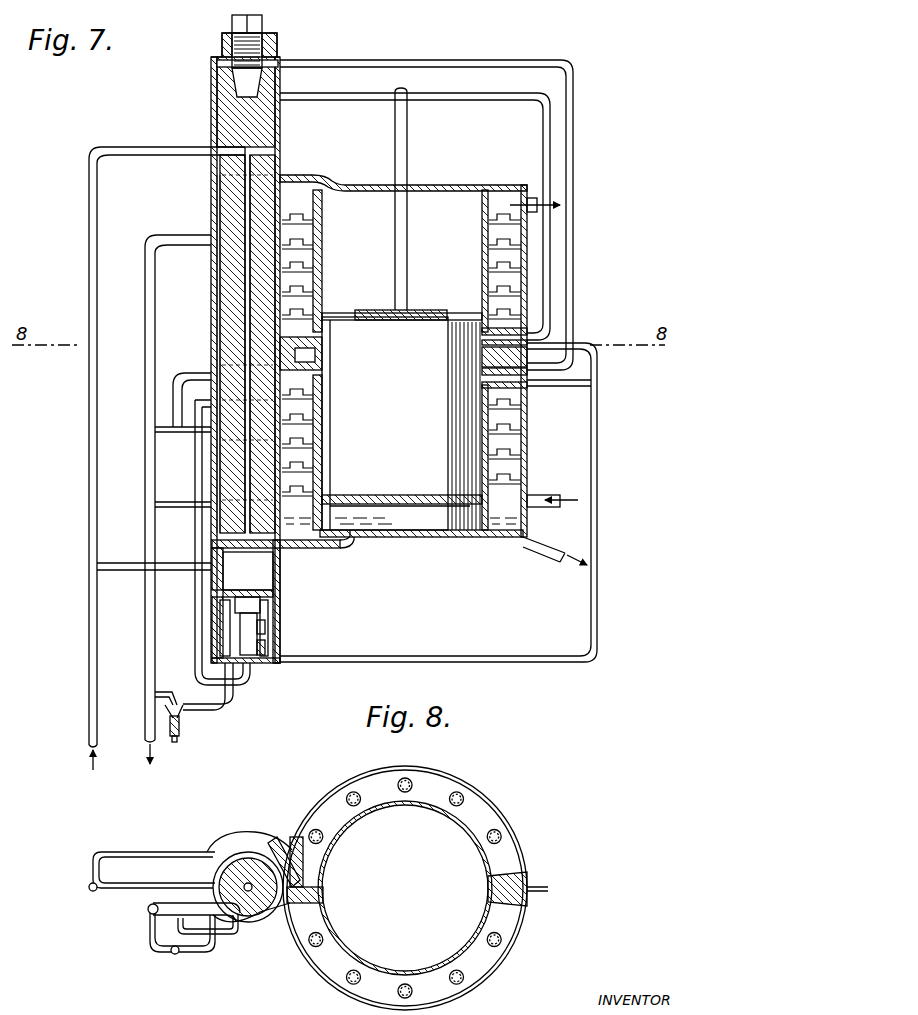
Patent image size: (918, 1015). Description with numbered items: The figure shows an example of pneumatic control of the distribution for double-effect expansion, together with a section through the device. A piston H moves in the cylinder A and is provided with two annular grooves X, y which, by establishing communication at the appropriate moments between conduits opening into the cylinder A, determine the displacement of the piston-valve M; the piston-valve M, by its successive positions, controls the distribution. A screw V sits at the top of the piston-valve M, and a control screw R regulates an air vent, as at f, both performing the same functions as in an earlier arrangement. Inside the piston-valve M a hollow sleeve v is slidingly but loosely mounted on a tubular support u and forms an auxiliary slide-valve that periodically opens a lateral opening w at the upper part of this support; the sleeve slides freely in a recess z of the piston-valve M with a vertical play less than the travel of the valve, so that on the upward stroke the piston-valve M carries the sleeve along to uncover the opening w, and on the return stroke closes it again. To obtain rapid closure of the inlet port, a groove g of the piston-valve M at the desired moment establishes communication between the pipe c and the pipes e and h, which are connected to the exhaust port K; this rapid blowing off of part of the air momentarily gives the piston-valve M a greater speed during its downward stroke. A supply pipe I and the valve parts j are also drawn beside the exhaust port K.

In FIG. 7, the screw / auxiliary slide-valve V is at (268, 46).
In FIG. 7, the piston-valve M is at (227, 197).
In FIG. 8, the piston-valve M is at (270, 905).
In FIG. 7, the cylinder A is at (460, 263).
In FIG. 7, the annular groove X is at (367, 318).
In FIG. 7, the piston H is at (402, 421).
In FIG. 7, the annular groove y is at (366, 506).
In FIG. 7, the recess z is at (262, 577).
In FIG. 7, the auxiliary slide-valve v is at (268, 607).
In FIG. 7, the lateral opening w is at (265, 627).
In FIG. 7, the tubular support u is at (265, 645).
In FIG. 7, the valve body j is at (245, 642).
In FIG. 7, the air vent f is at (186, 705).
In FIG. 8, the air vent f is at (173, 955).
In FIG. 7, the control screw R is at (182, 735).
In FIG. 7, the inlet pipe I is at (88, 718).
In FIG. 8, the inlet pipe I is at (91, 892).
In FIG. 7, the exhaust port K is at (143, 712).
In FIG. 8, the exhaust port K is at (148, 909).
In FIG. 7, the pipe h is at (199, 370).
In FIG. 8, the pipe h is at (228, 938).
In FIG. 7, the groove g is at (210, 393).
In FIG. 7, the pipe e is at (184, 437).
In FIG. 8, the pipe e is at (200, 932).
In FIG. 7, the pipe c is at (192, 481).